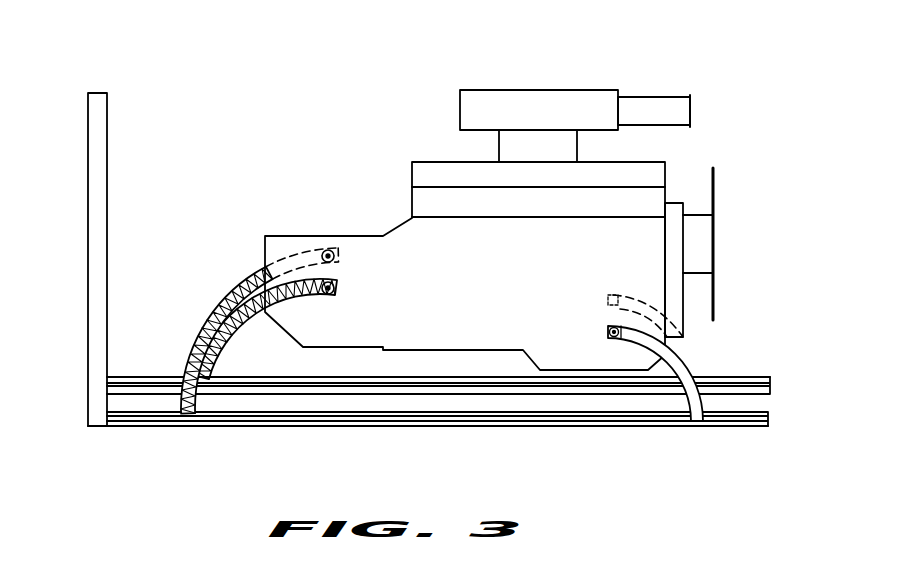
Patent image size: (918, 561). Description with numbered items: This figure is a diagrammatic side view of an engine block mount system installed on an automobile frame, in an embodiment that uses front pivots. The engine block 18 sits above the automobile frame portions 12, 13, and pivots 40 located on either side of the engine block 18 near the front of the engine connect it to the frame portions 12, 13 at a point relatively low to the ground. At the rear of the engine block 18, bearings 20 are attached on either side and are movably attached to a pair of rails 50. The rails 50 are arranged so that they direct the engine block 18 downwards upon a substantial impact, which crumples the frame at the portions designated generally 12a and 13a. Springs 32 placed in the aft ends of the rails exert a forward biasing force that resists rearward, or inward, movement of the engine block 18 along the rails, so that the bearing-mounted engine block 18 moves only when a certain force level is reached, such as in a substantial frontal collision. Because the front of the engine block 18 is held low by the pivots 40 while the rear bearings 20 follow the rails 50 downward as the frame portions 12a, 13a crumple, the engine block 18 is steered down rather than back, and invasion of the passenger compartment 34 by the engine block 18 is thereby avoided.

The passenger compartment 34 is at (44, 92).
The engine block 18 is at (404, 221).
The bearings 20 is at (335, 256).
The pivots 40 is at (606, 332).
The rails 50 is at (200, 318).
The springs 32 is at (250, 280).
The frame portion 13a is at (138, 380).
The frame portion 12a is at (148, 423).
The automobile frame portion 13 is at (747, 380).
The automobile frame portion 12 is at (768, 417).